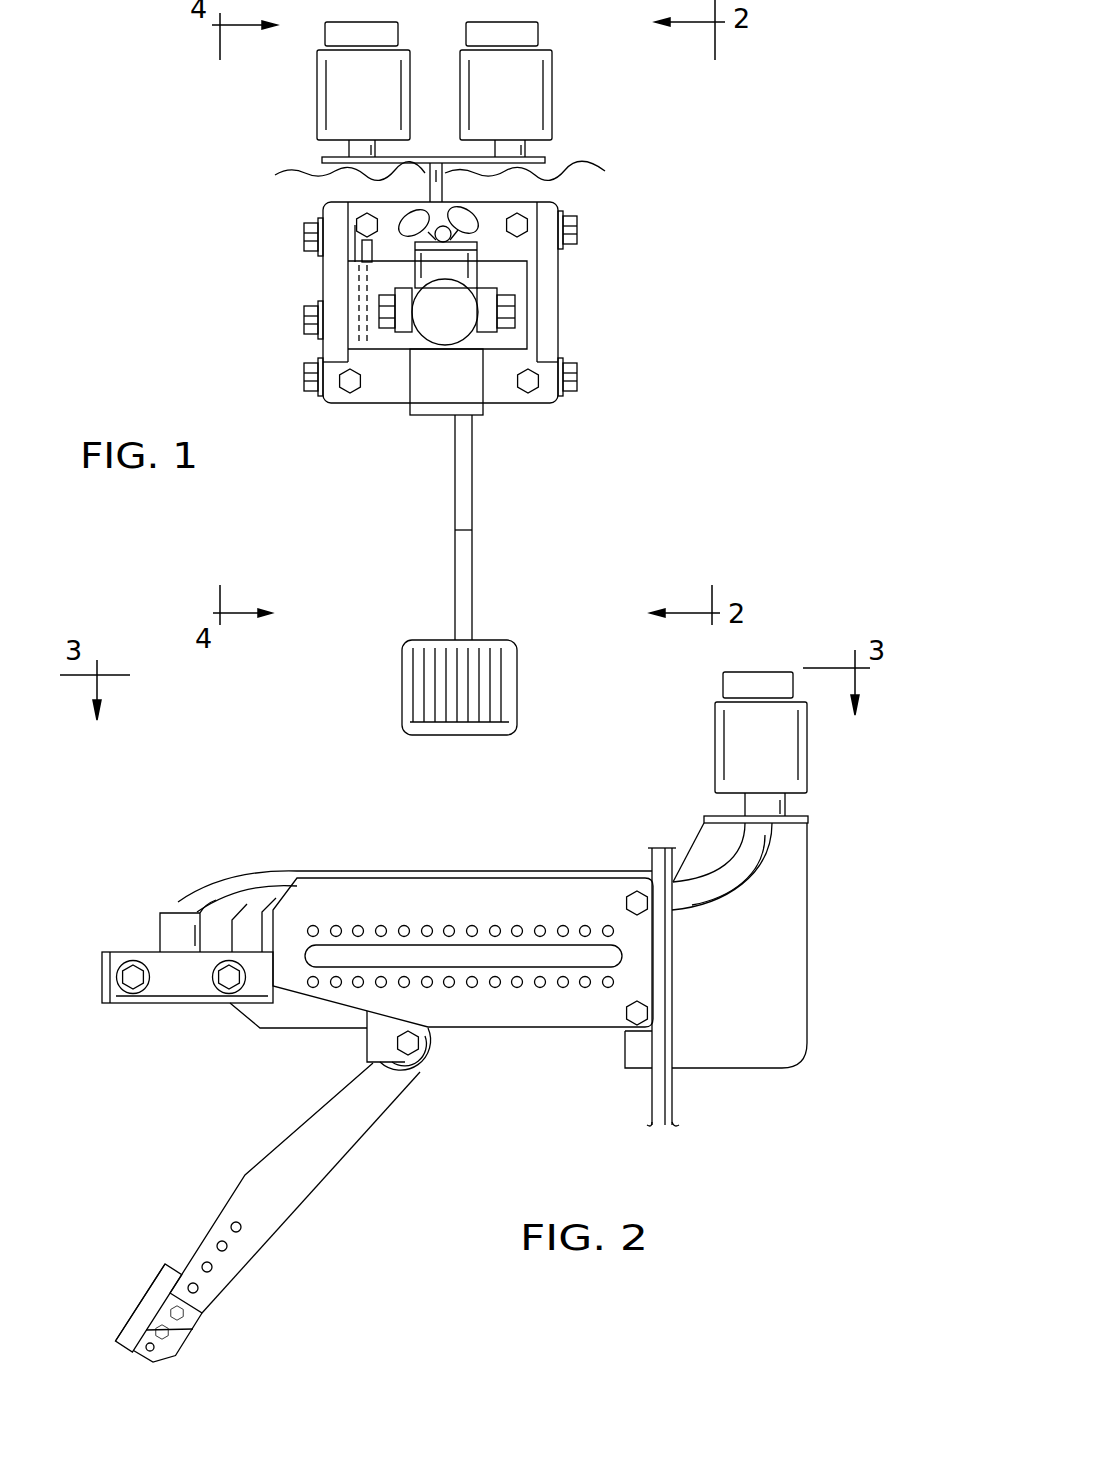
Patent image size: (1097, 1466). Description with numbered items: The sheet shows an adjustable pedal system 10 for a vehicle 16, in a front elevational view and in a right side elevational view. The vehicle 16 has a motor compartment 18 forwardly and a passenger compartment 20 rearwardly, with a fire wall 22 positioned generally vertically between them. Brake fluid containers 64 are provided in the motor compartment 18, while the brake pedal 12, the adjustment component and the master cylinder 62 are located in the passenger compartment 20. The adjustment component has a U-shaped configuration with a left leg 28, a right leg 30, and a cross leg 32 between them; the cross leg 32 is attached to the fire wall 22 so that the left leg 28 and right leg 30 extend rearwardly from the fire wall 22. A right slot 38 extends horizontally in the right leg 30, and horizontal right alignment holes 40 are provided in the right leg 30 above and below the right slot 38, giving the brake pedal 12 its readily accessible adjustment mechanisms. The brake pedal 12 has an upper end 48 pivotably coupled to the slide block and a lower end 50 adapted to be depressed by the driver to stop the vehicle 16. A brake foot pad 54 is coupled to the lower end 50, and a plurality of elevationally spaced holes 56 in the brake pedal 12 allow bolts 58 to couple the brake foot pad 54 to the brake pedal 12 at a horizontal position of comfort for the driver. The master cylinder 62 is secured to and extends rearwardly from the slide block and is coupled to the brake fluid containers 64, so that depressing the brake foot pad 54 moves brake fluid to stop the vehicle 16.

In FIG. 1, the adjustable pedal system 10 is at (678, 175).
In FIG. 1, the brake pedal 12 is at (473, 538).
In FIG. 2, the brake pedal 12 is at (245, 1178).
In FIG. 1, the vehicle 16 is at (670, 255).
In FIG. 2, the motor compartment 18 is at (757, 1108).
In FIG. 2, the passenger compartment 20 is at (545, 1125).
In FIG. 1, the fire wall 22 is at (633, 244).
In FIG. 2, the fire wall 22 is at (655, 852).
In FIG. 1, the left leg 28 is at (325, 290).
In FIG. 1, the right leg 30 is at (558, 290).
In FIG. 2, the right leg 30 is at (522, 910).
In FIG. 1, the cross leg 32 is at (500, 380).
In FIG. 2, the right slot 38 is at (405, 955).
In FIG. 2, the right alignment holes 40 is at (468, 929).
In FIG. 2, the upper end 48 is at (418, 1075).
In FIG. 2, the lower end 50 is at (150, 1362).
In FIG. 1, the brake foot pad 54 is at (420, 664).
In FIG. 2, the brake foot pad 54 is at (145, 1290).
In FIG. 2, the elevationally spaced holes 56 is at (222, 1247).
In FIG. 2, the bolts 58 is at (193, 1329).
In FIG. 1, the master cylinder 62 is at (437, 320).
In FIG. 2, the master cylinder 62 is at (162, 958).
In FIG. 1, the brake fluid containers 64 is at (371, 105).
In FIG. 2, the brake fluid containers 64 is at (771, 760).